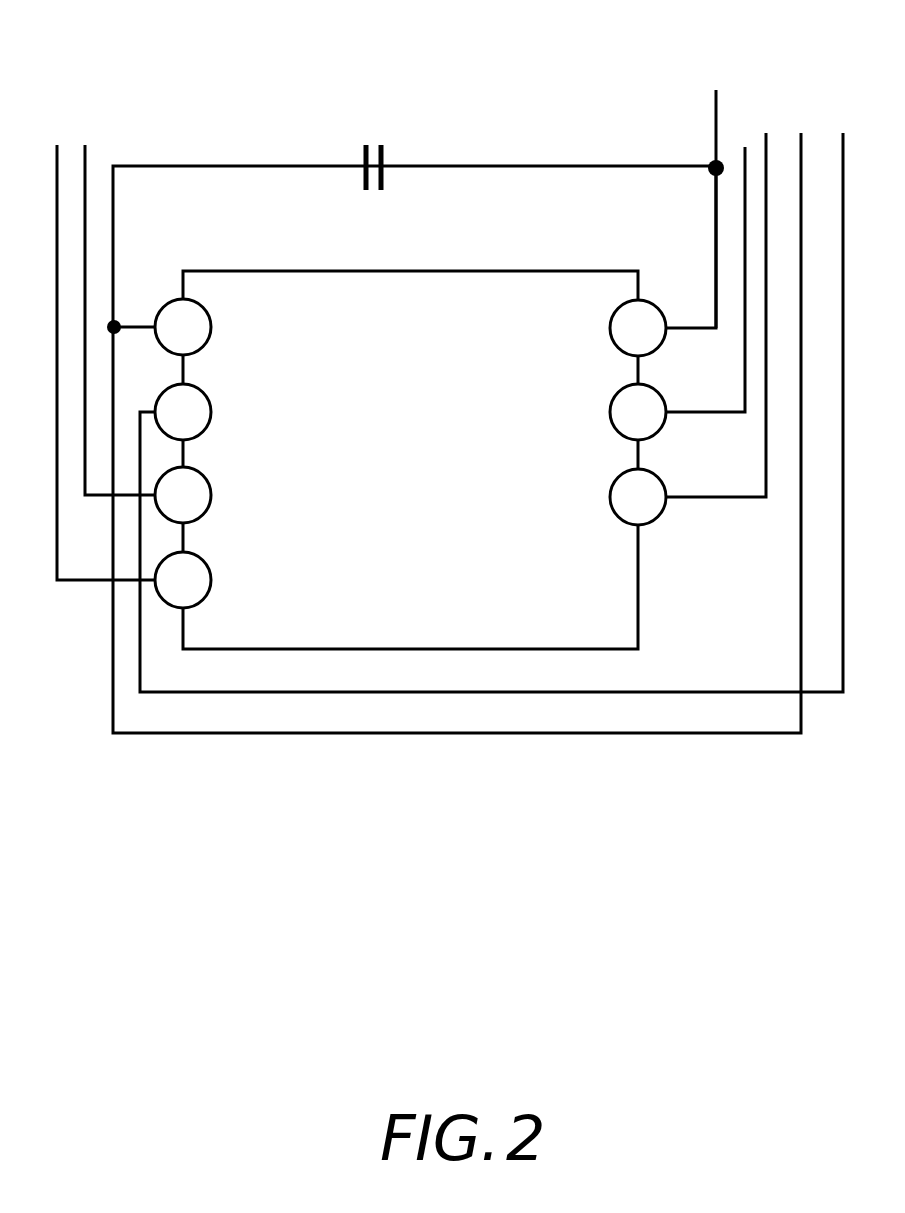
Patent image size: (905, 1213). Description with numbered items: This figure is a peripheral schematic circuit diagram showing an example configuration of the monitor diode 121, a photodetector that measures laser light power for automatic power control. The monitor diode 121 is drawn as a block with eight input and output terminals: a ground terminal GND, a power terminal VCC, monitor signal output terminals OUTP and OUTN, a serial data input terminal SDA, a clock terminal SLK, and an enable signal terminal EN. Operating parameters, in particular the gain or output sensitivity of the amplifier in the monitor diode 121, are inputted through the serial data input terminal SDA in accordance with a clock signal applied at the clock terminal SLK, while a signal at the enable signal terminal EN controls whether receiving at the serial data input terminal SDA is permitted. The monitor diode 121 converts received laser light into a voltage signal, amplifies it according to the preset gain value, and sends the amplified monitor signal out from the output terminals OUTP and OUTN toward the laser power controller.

The monitor diode 121 is at (250, 102).
The ground terminal GND is at (212, 327).
The enable signal terminal EN is at (207, 413).
The serial data input terminal SDA is at (211, 495).
The clock terminal SLK is at (211, 580).
The power terminal VCC is at (607, 328).
The monitor signal output terminal OUTP is at (603, 412).
The monitor signal output terminal OUTN is at (603, 497).